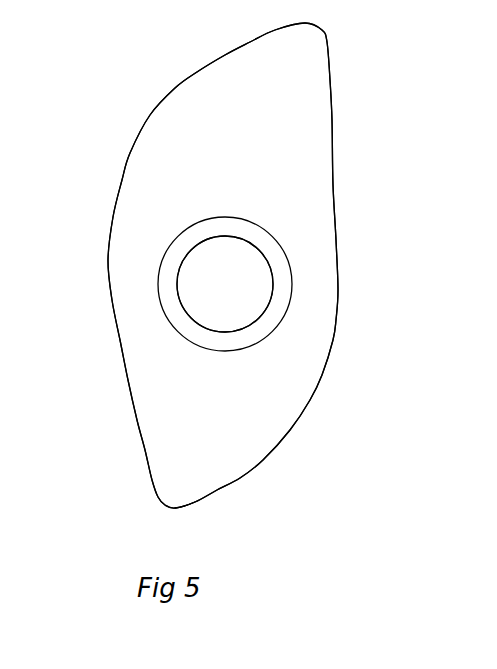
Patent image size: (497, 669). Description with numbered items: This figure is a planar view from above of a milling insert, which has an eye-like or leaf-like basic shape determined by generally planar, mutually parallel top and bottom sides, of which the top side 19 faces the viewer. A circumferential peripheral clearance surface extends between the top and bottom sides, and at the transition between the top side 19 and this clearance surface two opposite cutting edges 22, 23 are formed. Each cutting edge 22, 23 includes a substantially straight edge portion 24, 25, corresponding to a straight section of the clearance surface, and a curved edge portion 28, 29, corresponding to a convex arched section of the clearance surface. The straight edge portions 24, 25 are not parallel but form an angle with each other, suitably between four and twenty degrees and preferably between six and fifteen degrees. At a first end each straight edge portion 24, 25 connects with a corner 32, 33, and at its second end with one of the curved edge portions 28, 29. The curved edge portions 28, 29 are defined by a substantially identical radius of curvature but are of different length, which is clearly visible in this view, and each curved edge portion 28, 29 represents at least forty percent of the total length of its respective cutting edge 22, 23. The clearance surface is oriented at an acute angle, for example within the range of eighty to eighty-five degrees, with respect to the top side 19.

The top side 19 is at (260, 146).
The cutting edge 22 is at (345, 346).
The cutting edge 23 is at (125, 151).
The straight edge portion 24 is at (333, 185).
The straight edge portion 25 is at (137, 425).
The curved edge portion 28 is at (304, 415).
The curved edge portion 29 is at (195, 73).
The corner 32 is at (167, 507).
The corner 33 is at (313, 23).